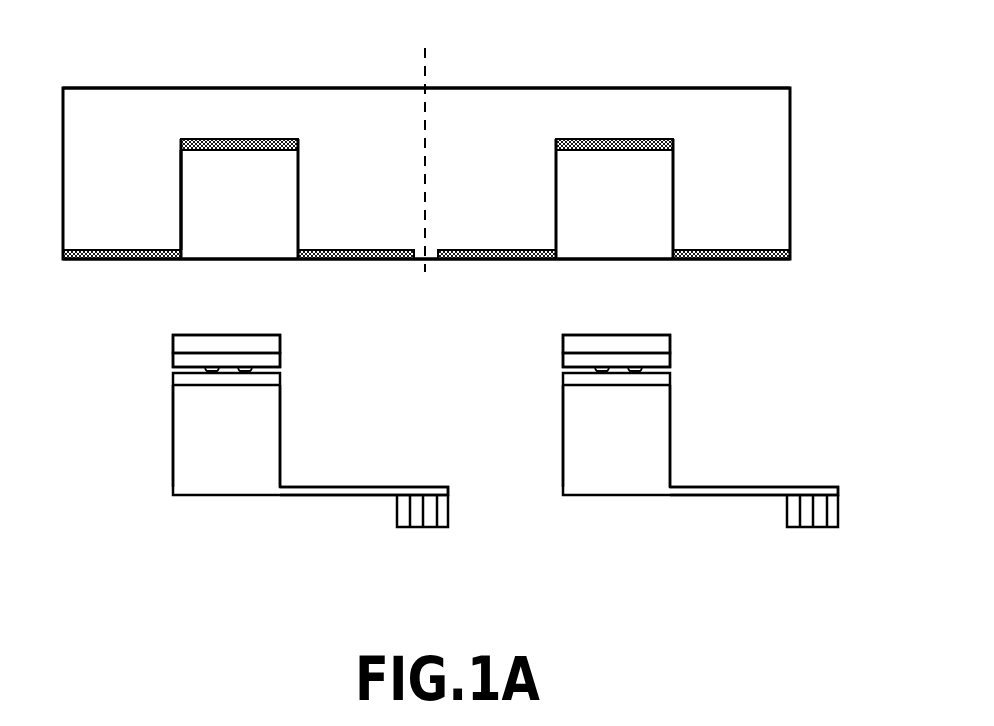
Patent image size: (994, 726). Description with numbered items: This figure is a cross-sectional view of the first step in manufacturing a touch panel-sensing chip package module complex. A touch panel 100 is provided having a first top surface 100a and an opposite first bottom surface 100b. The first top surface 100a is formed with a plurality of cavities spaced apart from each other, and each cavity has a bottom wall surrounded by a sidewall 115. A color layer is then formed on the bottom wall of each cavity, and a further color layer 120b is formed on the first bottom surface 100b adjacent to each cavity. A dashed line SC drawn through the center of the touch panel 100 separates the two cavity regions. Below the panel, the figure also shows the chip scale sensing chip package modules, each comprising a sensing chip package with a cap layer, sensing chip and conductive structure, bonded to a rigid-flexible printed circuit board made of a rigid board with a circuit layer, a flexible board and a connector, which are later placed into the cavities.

The touch panel 100 is at (406, 191).
The first top surface 100a is at (160, 78).
The first bottom surface 100b is at (767, 242).
The scribe/cutting line SC is at (432, 142).
The sidewall 115 is at (190, 185).
The color layer 120b is at (358, 259).